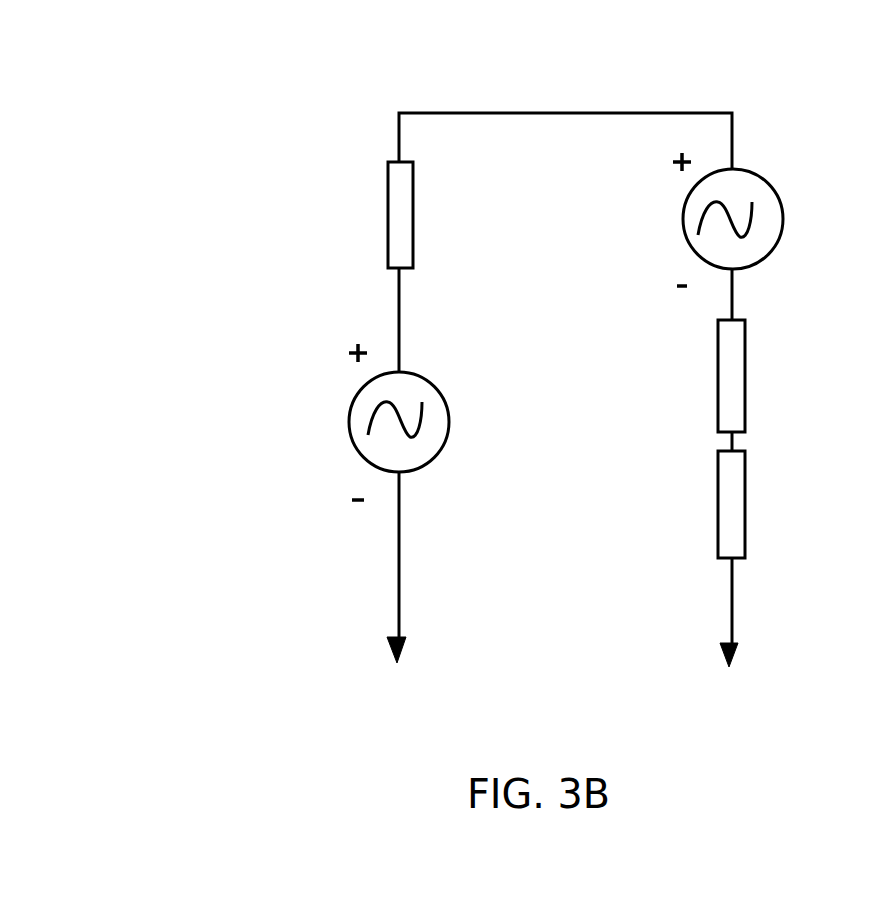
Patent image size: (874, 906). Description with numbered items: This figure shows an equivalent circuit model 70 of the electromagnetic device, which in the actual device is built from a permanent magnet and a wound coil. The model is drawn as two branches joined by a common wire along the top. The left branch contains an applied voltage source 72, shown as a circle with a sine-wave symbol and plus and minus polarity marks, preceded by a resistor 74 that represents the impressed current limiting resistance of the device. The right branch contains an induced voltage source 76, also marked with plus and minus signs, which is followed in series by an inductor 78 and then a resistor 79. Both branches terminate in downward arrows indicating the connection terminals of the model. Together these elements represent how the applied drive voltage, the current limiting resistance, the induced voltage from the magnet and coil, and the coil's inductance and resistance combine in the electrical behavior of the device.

The equivalent circuit model 70 is at (337, 106).
The applied voltage source 72 is at (360, 393).
The resistor 74 is at (413, 183).
The induced voltage source 76 is at (767, 182).
The inductor 78 is at (745, 398).
The resistor 79 is at (745, 527).